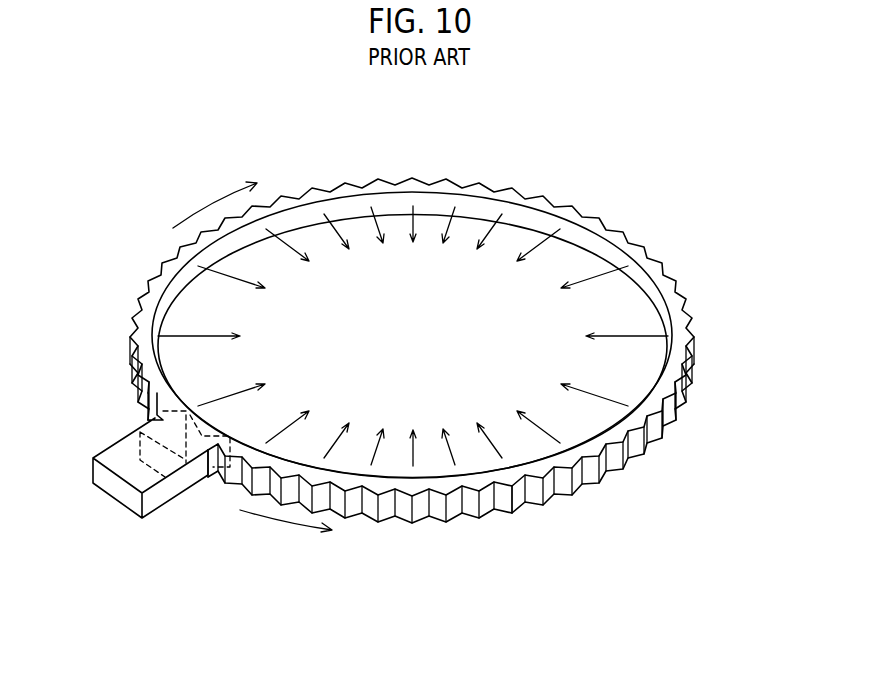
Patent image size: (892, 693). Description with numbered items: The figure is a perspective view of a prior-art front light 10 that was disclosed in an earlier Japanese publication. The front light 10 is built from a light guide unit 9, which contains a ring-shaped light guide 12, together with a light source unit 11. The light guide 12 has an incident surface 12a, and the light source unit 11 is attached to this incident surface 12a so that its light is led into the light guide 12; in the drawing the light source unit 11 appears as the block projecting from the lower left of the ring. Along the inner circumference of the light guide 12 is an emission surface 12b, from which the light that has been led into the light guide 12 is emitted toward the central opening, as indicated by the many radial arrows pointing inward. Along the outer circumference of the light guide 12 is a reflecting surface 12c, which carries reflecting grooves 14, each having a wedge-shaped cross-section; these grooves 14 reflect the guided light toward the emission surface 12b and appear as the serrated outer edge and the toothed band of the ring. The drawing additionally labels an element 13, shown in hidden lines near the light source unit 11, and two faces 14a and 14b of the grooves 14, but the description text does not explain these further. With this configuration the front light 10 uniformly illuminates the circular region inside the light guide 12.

The light guide unit 9 is at (683, 293).
The front light 10 is at (613, 200).
The light source unit 11 is at (112, 458).
The light guide 12 is at (313, 193).
The incident surface 12a is at (188, 463).
The emission surface 12b is at (393, 197).
The reflecting surface 12c is at (601, 481).
The hidden recess 13 is at (152, 418).
The reflecting grooves 14 is at (545, 615).
The first tooth face 14a is at (471, 514).
The second tooth face 14b is at (496, 514).